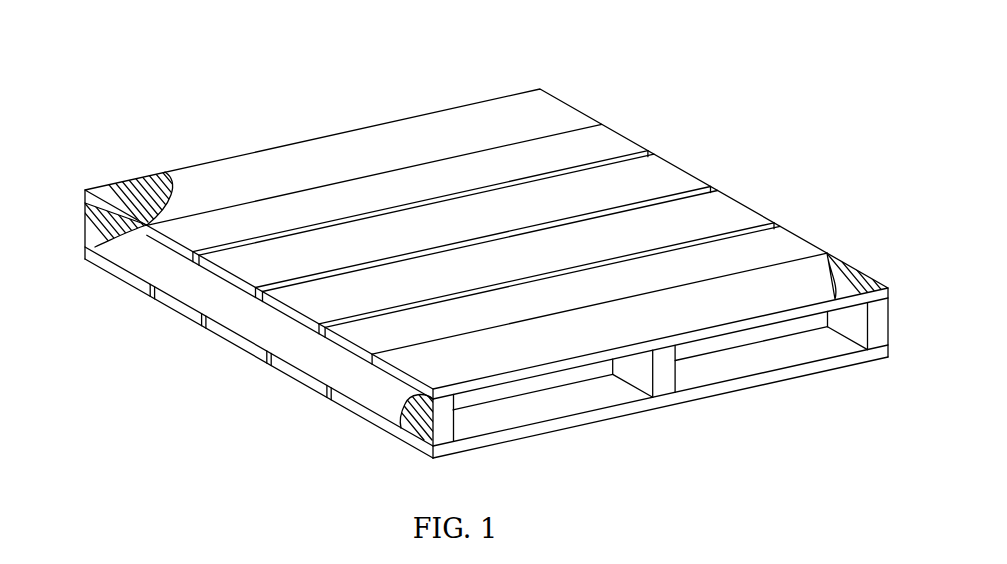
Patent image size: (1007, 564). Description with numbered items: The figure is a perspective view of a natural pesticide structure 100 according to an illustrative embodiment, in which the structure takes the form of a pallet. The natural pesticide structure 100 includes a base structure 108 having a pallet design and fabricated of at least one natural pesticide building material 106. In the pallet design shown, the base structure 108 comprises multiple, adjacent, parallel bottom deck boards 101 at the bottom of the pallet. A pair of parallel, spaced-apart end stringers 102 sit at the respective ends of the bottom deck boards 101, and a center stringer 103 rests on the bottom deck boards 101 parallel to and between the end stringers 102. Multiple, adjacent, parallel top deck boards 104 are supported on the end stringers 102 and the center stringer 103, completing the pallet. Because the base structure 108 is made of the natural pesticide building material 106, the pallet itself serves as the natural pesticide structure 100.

The natural pesticide structure 100 is at (247, 72).
The bottom deck boards 101 is at (240, 347).
The end stringers 102 is at (368, 388).
The center stringer 103 is at (648, 365).
The top deck boards 104 is at (617, 143).
The natural pesticide building material 106 is at (160, 306).
The base structure 108 is at (429, 111).